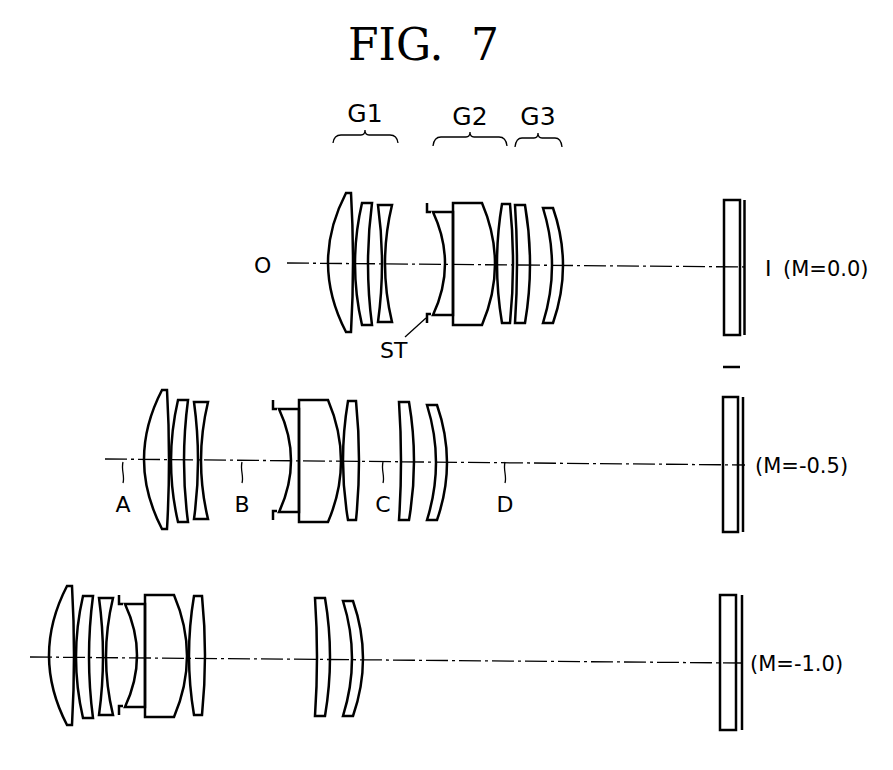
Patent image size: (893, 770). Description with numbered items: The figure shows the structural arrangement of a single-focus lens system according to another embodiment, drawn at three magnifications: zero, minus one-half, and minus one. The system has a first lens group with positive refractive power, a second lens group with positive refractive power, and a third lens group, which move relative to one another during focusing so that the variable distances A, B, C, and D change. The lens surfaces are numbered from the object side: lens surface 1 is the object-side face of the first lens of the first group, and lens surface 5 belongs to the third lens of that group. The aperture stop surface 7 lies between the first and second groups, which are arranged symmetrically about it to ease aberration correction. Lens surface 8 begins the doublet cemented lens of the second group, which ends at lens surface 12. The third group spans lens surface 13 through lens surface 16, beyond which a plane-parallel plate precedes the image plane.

The lens surface 1 is at (334, 198).
The lens surface 5 is at (397, 205).
The aperture stop surface 7 is at (427, 206).
The lens surface 8 is at (436, 211).
The lens surface 12 is at (505, 204).
The lens surface 13 is at (518, 206).
The lens surface 16 is at (558, 209).